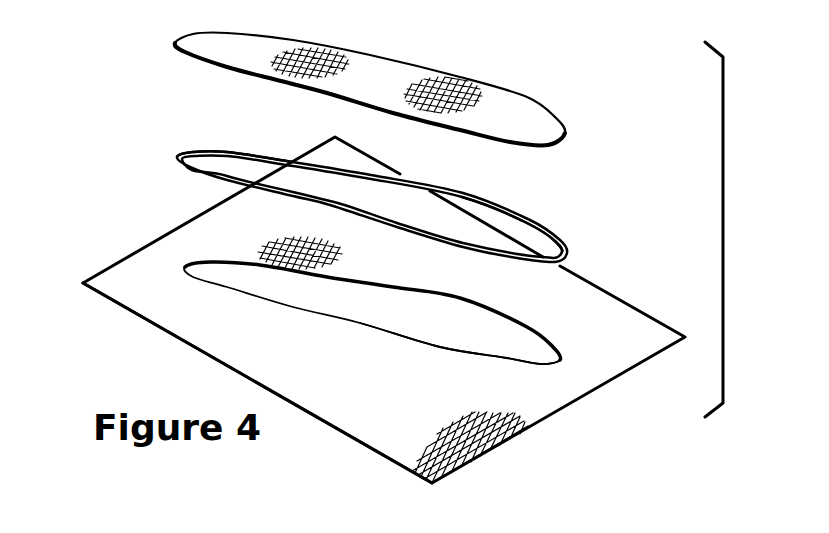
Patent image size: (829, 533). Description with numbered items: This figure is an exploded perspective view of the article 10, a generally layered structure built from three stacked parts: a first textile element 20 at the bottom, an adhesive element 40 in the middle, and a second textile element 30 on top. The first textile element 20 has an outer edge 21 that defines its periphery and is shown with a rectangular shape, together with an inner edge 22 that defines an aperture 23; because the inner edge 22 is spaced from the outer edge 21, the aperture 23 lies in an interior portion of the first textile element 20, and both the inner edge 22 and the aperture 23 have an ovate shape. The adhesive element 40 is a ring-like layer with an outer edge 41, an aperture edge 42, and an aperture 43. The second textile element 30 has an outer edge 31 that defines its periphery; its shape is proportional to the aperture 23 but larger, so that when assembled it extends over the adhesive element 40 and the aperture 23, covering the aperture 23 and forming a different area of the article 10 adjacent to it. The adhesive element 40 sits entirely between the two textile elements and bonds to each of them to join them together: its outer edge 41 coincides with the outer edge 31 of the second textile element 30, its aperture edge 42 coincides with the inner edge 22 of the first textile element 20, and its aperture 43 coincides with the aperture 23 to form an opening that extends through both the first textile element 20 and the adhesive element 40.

The article 10 is at (110, 67).
The first textile element 20 is at (382, 310).
The outer edge 21 is at (142, 322).
The inner edge 22 is at (510, 358).
The aperture 23 is at (415, 320).
The second textile element 30 is at (370, 79).
The outer edge 31 is at (443, 67).
The adhesive element 40 is at (382, 181).
The outer edge 41 is at (443, 183).
The aperture edge 42 is at (235, 178).
The aperture 43 is at (505, 223).